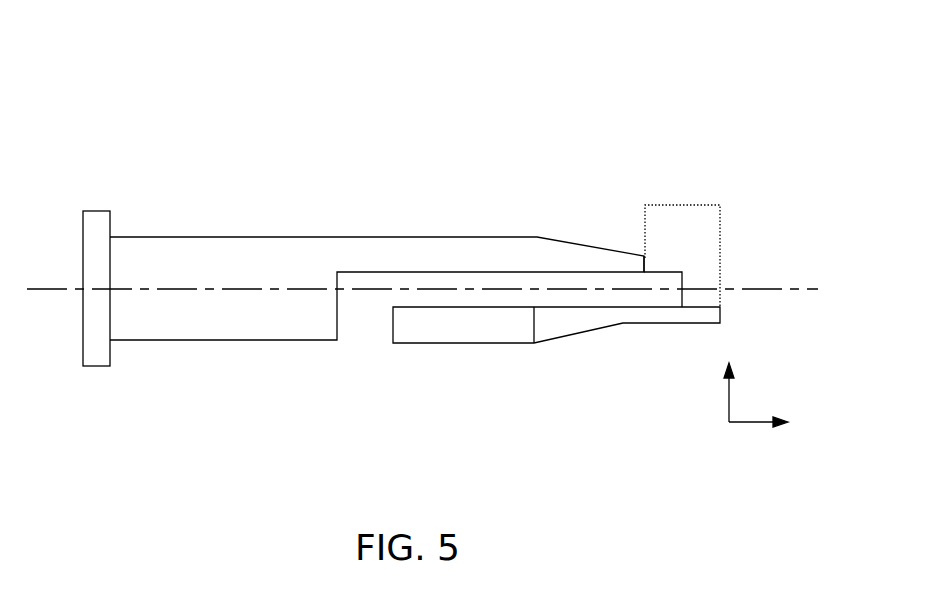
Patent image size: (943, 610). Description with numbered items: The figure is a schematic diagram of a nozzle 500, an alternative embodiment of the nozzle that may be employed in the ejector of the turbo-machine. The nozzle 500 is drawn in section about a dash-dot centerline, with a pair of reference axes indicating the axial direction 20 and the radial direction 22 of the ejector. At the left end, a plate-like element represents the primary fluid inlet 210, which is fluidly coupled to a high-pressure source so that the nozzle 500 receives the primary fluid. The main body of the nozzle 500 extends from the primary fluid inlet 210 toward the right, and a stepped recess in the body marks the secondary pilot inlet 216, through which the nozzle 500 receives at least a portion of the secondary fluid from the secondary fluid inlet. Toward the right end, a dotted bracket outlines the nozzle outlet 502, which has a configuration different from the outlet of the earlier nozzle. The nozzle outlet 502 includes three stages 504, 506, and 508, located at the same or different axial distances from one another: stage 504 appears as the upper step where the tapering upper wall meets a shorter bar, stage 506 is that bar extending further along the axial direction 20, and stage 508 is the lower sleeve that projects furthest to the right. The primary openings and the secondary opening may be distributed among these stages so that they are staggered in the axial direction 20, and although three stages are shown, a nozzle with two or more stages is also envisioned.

The nozzle 500 is at (662, 87).
The primary fluid inlet 210 is at (98, 210).
The secondary pilot inlet 216 is at (363, 343).
The nozzle outlet 502 is at (682, 205).
The stage 504 is at (647, 260).
The stage 506 is at (683, 279).
The stage 508 is at (722, 315).
The radial direction 22 is at (727, 400).
The axial direction 20 is at (752, 425).